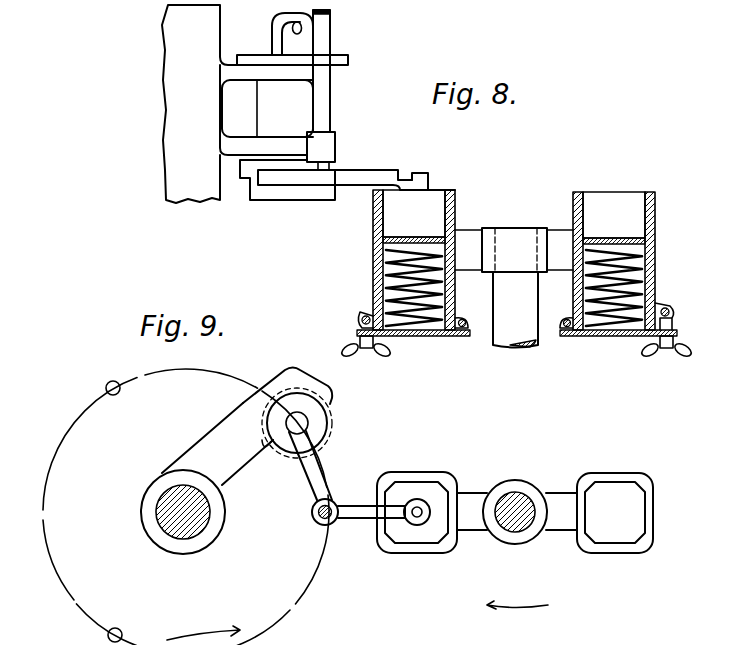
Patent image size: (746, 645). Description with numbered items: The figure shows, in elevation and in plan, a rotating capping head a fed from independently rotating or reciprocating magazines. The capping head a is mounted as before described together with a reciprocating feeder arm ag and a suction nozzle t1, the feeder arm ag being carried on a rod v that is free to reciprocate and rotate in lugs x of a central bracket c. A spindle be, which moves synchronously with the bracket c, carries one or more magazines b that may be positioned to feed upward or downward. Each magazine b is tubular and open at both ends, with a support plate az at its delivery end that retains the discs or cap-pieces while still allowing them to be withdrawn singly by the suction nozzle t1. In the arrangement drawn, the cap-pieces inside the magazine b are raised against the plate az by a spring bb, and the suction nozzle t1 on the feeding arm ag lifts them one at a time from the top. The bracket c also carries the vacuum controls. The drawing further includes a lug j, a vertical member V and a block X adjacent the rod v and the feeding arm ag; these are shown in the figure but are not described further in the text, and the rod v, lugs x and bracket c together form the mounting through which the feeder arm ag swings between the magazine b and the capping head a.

In FIG. 8, the central bracket c is at (234, 104).
In FIG. 9, the central bracket c is at (207, 478).
In FIG. 8, the lugs x is at (232, 143).
In FIG. 8, the capping head a is at (285, 108).
In FIG. 9, the capping head a is at (300, 381).
In FIG. 8, the bracket lug j is at (277, 40).
In FIG. 8, the vertical rod V is at (322, 92).
In FIG. 8, the connecting block X is at (321, 151).
In FIG. 8, the feeding arm ag is at (362, 178).
In FIG. 9, the feeding arm ag is at (347, 504).
In FIG. 8, the suction nozzle t1 is at (415, 186).
In FIG. 9, the suction nozzle t1 is at (438, 504).
In FIG. 8, the support plate az is at (440, 193).
In FIG. 9, the support plate az is at (432, 485).
In FIG. 8, the magazine b is at (452, 304).
In FIG. 9, the magazine b is at (378, 532).
In FIG. 8, the spring bb is at (392, 284).
In FIG. 8, the spindle be is at (514, 288).
In FIG. 9, the spindle be is at (515, 492).
In FIG. 9, the rod v is at (313, 478).